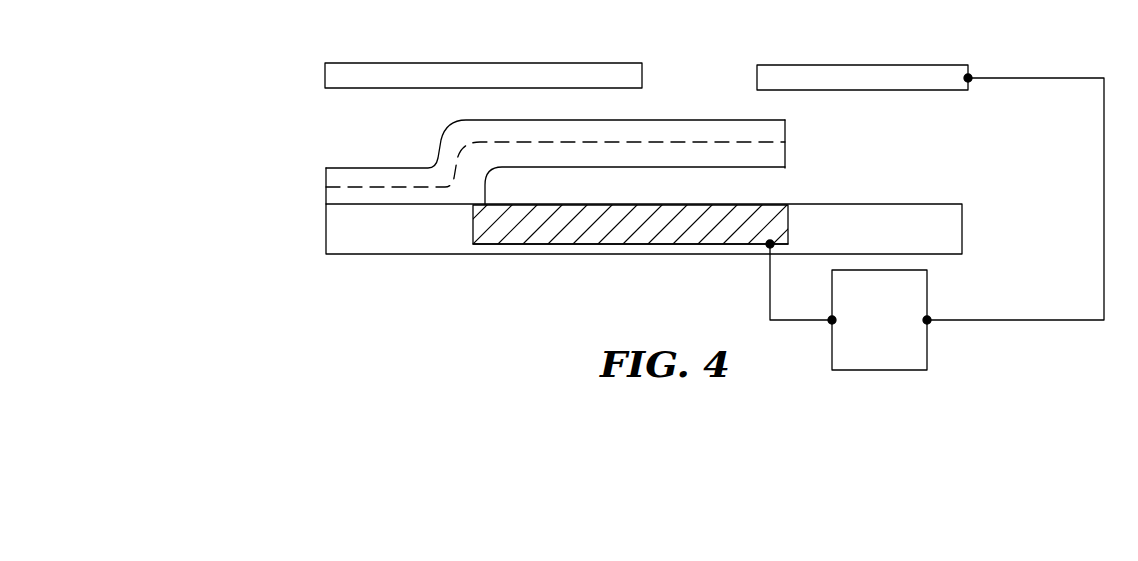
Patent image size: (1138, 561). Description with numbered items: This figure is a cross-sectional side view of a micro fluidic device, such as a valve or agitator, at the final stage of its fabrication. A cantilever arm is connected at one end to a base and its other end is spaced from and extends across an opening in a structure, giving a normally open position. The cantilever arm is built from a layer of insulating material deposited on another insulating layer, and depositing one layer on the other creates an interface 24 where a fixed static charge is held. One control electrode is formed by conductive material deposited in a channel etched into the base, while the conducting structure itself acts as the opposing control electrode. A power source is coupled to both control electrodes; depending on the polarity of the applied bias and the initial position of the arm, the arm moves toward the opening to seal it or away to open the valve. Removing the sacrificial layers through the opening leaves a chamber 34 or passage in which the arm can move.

The interface 24 is at (314, 184).
The chamber 34 is at (936, 144).